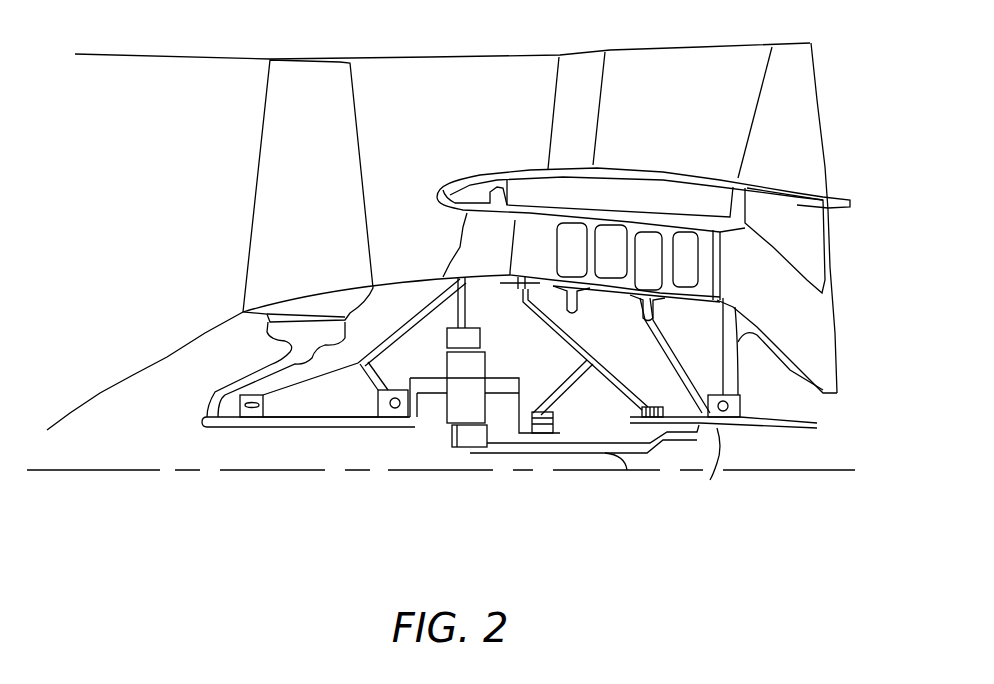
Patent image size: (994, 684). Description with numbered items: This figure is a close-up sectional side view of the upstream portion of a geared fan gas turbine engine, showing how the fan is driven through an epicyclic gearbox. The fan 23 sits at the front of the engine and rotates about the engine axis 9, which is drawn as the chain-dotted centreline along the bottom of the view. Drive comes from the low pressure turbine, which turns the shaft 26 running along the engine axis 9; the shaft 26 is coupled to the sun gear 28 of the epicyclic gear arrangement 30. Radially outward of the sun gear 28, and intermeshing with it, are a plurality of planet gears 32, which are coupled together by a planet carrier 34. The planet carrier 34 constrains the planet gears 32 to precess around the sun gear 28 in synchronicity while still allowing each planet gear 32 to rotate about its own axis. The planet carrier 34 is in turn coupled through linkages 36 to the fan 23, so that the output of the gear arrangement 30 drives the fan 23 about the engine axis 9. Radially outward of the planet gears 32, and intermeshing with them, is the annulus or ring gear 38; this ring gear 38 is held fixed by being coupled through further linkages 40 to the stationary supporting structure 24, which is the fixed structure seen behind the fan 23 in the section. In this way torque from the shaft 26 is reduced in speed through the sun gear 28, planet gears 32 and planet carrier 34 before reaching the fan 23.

The engine axis 9 is at (138, 473).
The fan 23 is at (283, 187).
The stationary supporting structure 24 is at (468, 235).
The shaft 26 is at (593, 450).
The sun gear 28 is at (467, 438).
The epicyclic gear arrangement 30 is at (433, 420).
The planet gears 32 is at (453, 410).
The planet carrier 34 is at (508, 410).
The linkages 36 is at (422, 418).
The ring gear 38 is at (470, 338).
The linkages 40 is at (467, 310).